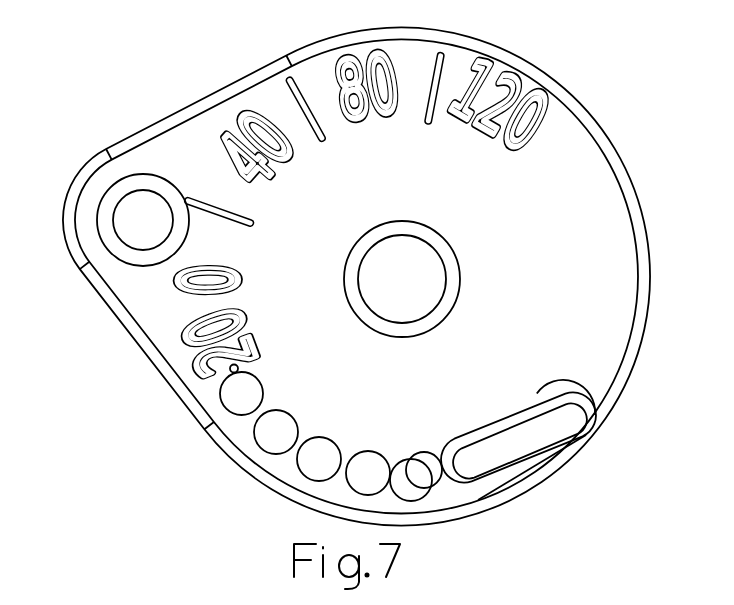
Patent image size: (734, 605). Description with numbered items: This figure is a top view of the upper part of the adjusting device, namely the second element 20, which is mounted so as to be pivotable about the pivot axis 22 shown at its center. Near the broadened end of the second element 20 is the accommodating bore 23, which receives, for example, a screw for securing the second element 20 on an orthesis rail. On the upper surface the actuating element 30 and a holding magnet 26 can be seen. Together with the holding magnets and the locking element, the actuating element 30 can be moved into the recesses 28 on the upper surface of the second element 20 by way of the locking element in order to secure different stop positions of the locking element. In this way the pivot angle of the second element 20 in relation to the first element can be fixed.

The second element 20 is at (615, 262).
The pivot axis 22 is at (404, 277).
The accommodating bore 23 is at (142, 218).
The holding magnet 26 is at (413, 487).
The recesses 28 is at (272, 436).
The actuating element 30 is at (598, 421).